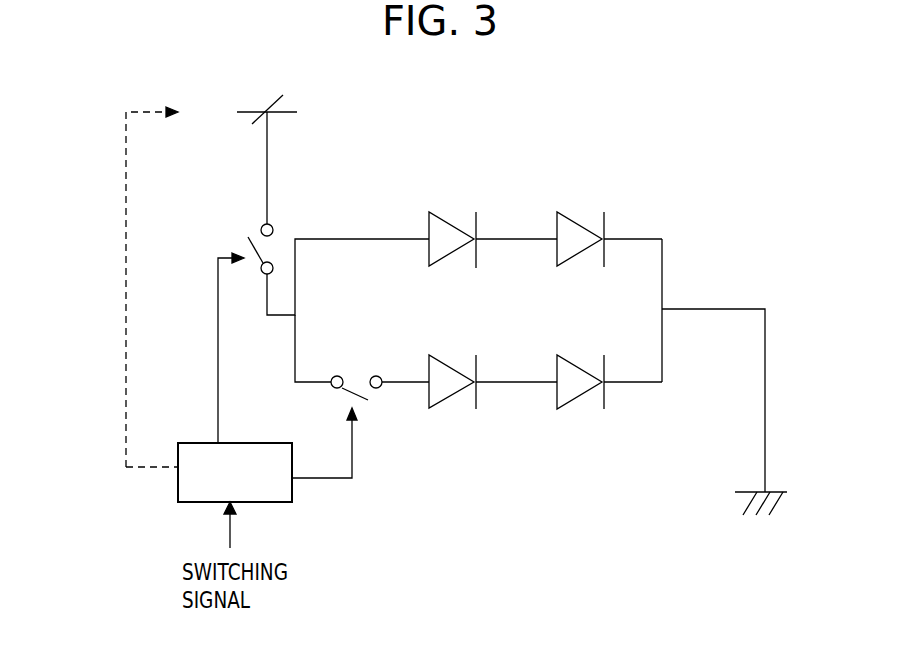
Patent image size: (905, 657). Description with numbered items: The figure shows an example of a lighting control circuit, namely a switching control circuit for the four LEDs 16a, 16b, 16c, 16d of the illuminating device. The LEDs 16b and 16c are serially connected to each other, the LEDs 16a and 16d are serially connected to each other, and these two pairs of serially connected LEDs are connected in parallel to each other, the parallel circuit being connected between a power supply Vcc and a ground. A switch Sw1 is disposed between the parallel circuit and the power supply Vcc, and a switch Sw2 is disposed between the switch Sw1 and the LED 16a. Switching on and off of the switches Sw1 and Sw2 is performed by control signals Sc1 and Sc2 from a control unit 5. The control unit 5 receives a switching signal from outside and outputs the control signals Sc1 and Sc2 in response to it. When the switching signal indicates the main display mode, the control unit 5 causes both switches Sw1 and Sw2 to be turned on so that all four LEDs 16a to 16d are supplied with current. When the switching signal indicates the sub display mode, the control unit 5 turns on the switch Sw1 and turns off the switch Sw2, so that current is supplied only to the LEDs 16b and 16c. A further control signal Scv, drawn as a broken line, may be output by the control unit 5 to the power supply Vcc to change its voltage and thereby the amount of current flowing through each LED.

The control unit 5 is at (178, 487).
The LED 16a is at (443, 402).
The LED 16b is at (452, 218).
The LED 16c is at (578, 220).
The LED 16d is at (567, 408).
The switch Sw1 is at (313, 262).
The switch Sw2 is at (362, 357).
The control signal Sc1 is at (218, 373).
The control signal Sc2 is at (322, 480).
The control signal Scv is at (126, 265).
The power supply Vcc is at (243, 159).